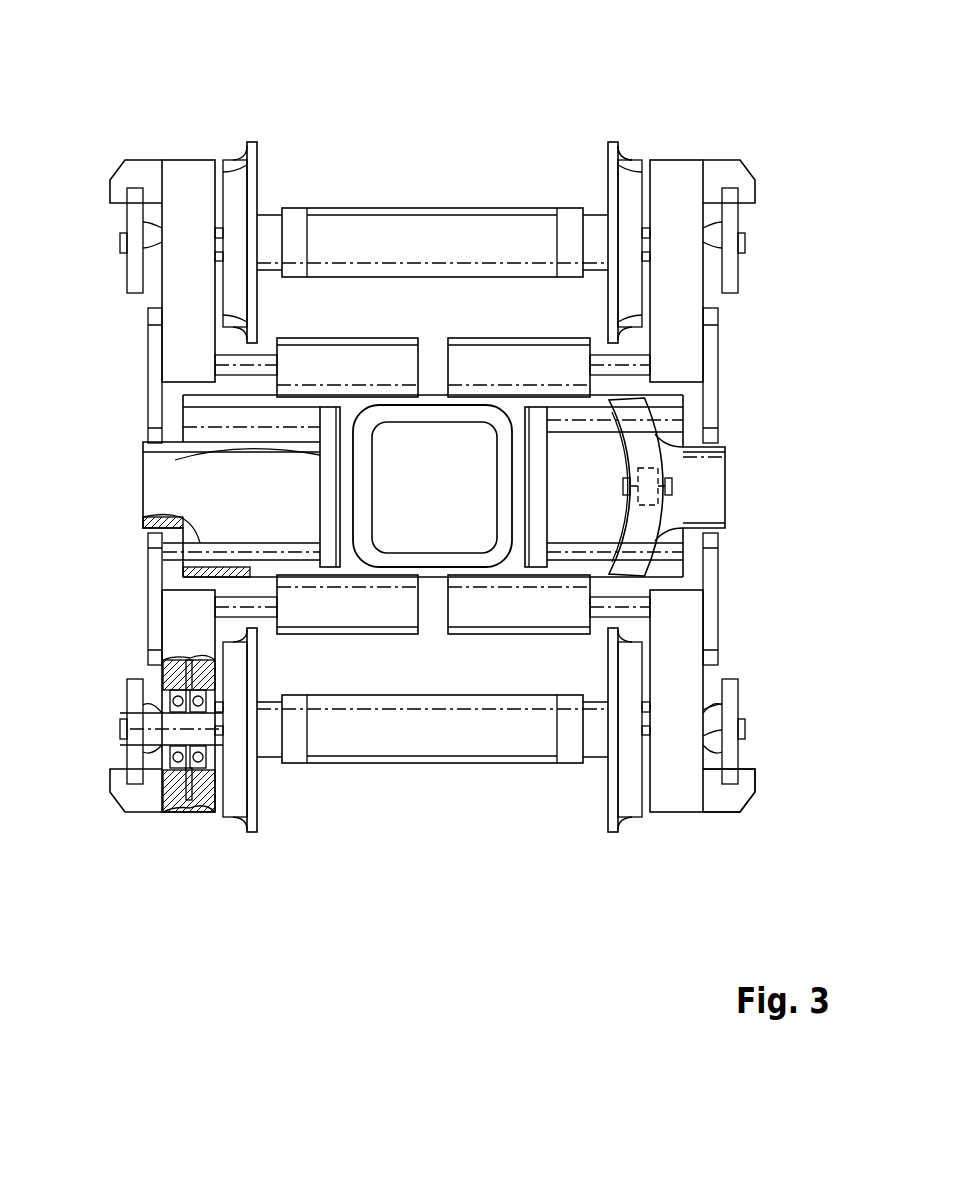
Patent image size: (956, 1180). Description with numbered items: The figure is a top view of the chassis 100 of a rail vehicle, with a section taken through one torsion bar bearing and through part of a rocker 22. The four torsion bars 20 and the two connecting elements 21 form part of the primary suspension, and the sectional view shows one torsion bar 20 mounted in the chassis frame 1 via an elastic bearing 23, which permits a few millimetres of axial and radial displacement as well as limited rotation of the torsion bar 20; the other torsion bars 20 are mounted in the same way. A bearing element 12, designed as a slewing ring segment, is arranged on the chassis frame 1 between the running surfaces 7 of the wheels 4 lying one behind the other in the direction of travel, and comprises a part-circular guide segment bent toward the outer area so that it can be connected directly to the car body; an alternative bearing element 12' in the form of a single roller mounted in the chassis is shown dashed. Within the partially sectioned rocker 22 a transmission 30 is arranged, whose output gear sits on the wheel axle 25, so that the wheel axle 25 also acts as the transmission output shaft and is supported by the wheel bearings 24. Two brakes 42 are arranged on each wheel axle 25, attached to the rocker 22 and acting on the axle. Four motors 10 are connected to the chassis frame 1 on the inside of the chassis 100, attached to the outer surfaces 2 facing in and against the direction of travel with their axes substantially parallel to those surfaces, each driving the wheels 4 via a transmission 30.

The chassis 100 is at (300, 78).
The chassis frame 1 is at (438, 560).
The outer surfaces 2 is at (600, 396).
The wheels 4 is at (250, 172).
The running surfaces 7 is at (629, 188).
The motors 10 is at (345, 352).
The bearing element 12 is at (699, 500).
The alternative bearing element 12' is at (708, 460).
The torsion bars 20 is at (255, 421).
The connecting elements 21 is at (333, 458).
The rocker 22 is at (175, 302).
The elastic bearing 23 is at (143, 512).
The wheel bearings 24 is at (200, 792).
The wheel axle 25 is at (180, 728).
The transmission 30 is at (178, 698).
The brakes 42 is at (718, 795).